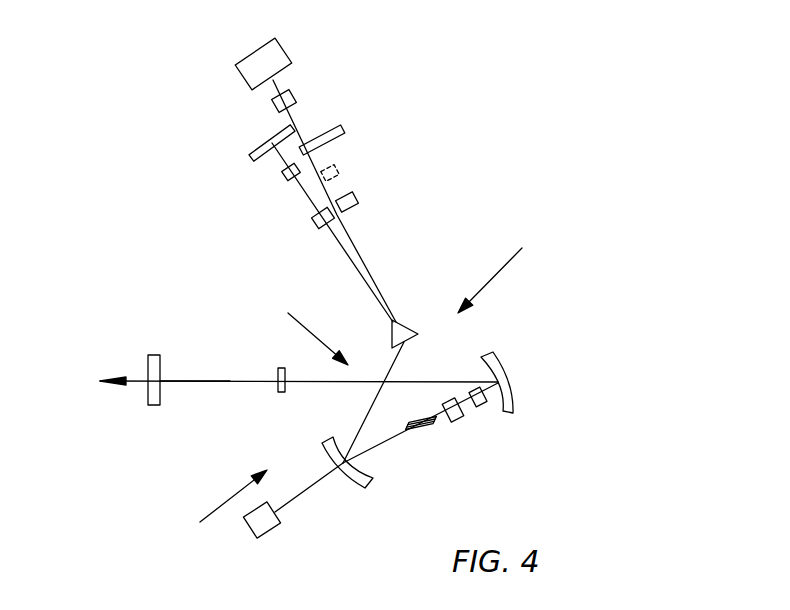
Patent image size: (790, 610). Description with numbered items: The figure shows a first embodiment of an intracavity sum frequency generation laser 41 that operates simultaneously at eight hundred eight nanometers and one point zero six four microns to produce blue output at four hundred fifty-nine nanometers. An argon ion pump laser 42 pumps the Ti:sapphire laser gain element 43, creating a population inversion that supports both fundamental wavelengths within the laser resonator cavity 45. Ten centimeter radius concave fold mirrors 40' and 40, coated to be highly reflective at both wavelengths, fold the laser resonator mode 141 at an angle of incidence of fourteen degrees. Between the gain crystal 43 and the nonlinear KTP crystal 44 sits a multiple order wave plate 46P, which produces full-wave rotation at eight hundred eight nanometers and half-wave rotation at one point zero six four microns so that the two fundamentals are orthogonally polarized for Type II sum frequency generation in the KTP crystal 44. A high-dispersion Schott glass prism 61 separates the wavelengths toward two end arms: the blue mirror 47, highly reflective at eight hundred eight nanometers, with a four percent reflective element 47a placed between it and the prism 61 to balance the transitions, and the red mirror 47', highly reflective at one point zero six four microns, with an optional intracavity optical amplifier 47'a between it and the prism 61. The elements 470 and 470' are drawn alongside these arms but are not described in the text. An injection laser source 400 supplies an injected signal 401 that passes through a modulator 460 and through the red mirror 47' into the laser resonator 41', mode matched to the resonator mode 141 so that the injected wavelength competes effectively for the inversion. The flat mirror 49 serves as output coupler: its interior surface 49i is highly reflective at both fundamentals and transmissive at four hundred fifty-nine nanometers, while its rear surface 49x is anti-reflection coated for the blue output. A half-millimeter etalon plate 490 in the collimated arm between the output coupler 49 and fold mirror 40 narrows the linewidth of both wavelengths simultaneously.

The injection laser source 400 is at (292, 52).
The modulator 460 is at (297, 93).
The injected signal 401 is at (297, 120).
The blue mirror 47 is at (262, 130).
The 4 percent reflective element 47a is at (280, 177).
The optical element 470 is at (287, 228).
The red mirror 47' is at (353, 128).
The intracavity 1.064 micron optical amplifier 47'a is at (373, 155).
The optical element 470' is at (384, 189).
The prism 61 is at (409, 328).
The laser resonator 41' is at (301, 326).
The laser resonator cavity 45 is at (505, 267).
The laser 41 is at (217, 507).
The argon ion pump laser 42 is at (272, 531).
The concave fold mirror 40' is at (365, 487).
The laser gain element 43 is at (418, 430).
The multiple order wave plate 46P is at (462, 425).
The KTP crystal 44 is at (483, 410).
The concave fold mirror 40 is at (522, 389).
The laser resonator mode 141 is at (235, 382).
The rear surface of mirror 49 49x is at (148, 366).
The interior surface of mirror 49 49i is at (160, 370).
The mirror 49 is at (157, 407).
The etalon plate 490 is at (282, 393).